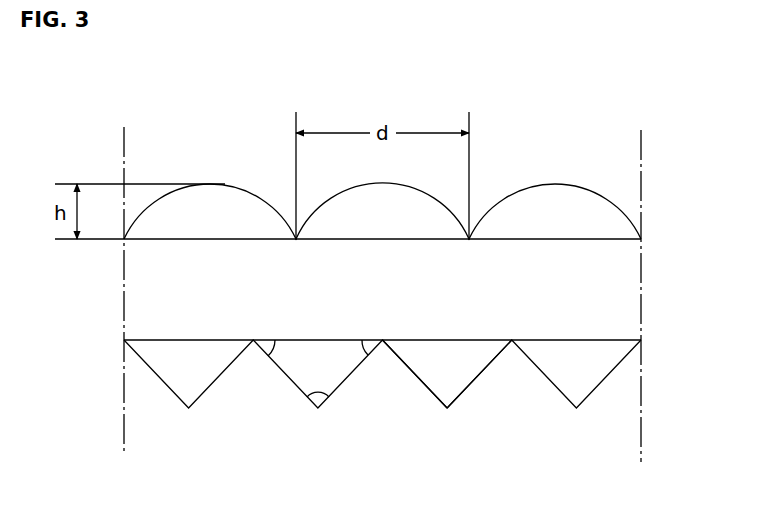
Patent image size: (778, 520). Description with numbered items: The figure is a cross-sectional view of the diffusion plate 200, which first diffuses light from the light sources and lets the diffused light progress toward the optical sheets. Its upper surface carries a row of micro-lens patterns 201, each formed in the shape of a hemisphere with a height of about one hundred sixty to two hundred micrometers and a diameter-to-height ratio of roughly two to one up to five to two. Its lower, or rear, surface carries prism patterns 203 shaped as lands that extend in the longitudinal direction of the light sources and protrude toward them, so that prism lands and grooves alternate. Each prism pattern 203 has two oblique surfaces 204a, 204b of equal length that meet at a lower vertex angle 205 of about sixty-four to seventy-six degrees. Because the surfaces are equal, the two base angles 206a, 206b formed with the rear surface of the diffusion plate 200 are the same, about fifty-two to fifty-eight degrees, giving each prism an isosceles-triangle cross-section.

The diffusion plate 200 is at (628, 297).
The micro-lens pattern 201 is at (571, 176).
The prism pattern 203 is at (597, 410).
The oblique surface 204a is at (421, 382).
The oblique surface 204b is at (477, 380).
The lower vertex angle 205 is at (327, 391).
The base angle 206a is at (269, 360).
The base angle 206b is at (358, 352).